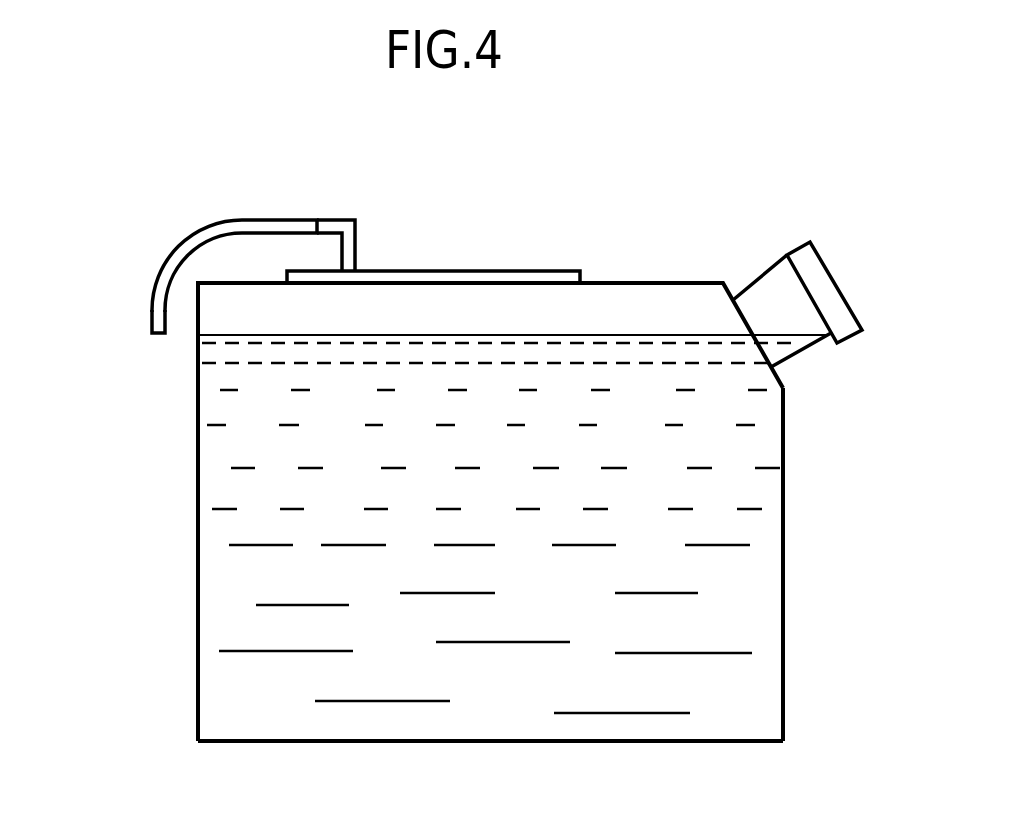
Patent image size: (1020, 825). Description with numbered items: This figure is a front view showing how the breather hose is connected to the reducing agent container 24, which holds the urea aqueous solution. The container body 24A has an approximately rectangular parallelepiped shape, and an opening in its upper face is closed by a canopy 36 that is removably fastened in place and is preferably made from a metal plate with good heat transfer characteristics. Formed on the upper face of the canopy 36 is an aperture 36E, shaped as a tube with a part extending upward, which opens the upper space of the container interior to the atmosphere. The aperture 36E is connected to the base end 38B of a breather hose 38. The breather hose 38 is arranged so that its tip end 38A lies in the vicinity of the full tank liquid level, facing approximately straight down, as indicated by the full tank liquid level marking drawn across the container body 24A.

The reducing agent container 24 is at (681, 279).
The container body 24A is at (784, 448).
The canopy 36 is at (496, 264).
The aperture 36E is at (356, 246).
The breather hose 38 is at (164, 259).
The tip end 38A is at (152, 333).
The base end 38B is at (308, 227).